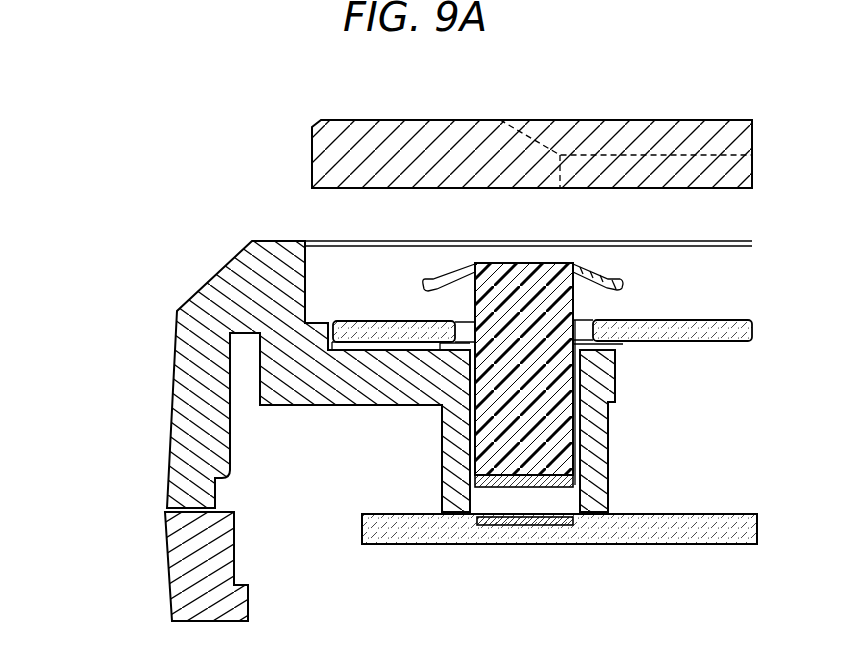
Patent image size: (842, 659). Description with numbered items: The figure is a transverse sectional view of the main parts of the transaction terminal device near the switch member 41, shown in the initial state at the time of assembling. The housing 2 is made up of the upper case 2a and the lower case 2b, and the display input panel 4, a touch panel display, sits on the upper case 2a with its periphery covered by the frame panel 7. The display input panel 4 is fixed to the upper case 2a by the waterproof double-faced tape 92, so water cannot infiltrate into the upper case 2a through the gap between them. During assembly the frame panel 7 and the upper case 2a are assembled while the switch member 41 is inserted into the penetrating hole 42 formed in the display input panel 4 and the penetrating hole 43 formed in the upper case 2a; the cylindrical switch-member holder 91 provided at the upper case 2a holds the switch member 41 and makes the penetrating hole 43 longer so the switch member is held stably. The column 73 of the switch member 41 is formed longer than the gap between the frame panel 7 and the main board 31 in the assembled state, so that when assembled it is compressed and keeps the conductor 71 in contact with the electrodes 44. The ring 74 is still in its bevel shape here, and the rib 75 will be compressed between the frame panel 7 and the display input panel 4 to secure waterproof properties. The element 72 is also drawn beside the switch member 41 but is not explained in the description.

The frame panel 7 is at (563, 120).
The housing 2 is at (247, 431).
The upper case 2a is at (167, 460).
The lower case 2b is at (167, 555).
The display input panel 4 is at (670, 320).
The switch member 41 is at (505, 262).
The penetrating hole 42 is at (462, 325).
The penetrating hole 43 is at (483, 438).
The electrodes 44 is at (508, 527).
The main board 31 is at (640, 547).
The conductor 71 is at (540, 487).
The lower yoke 72 is at (577, 425).
The column 73 is at (578, 367).
The ring 74 is at (587, 270).
The rib 75 is at (620, 272).
The switch-member holder 91 is at (610, 465).
The waterproof double-faced tape 92 is at (377, 352).